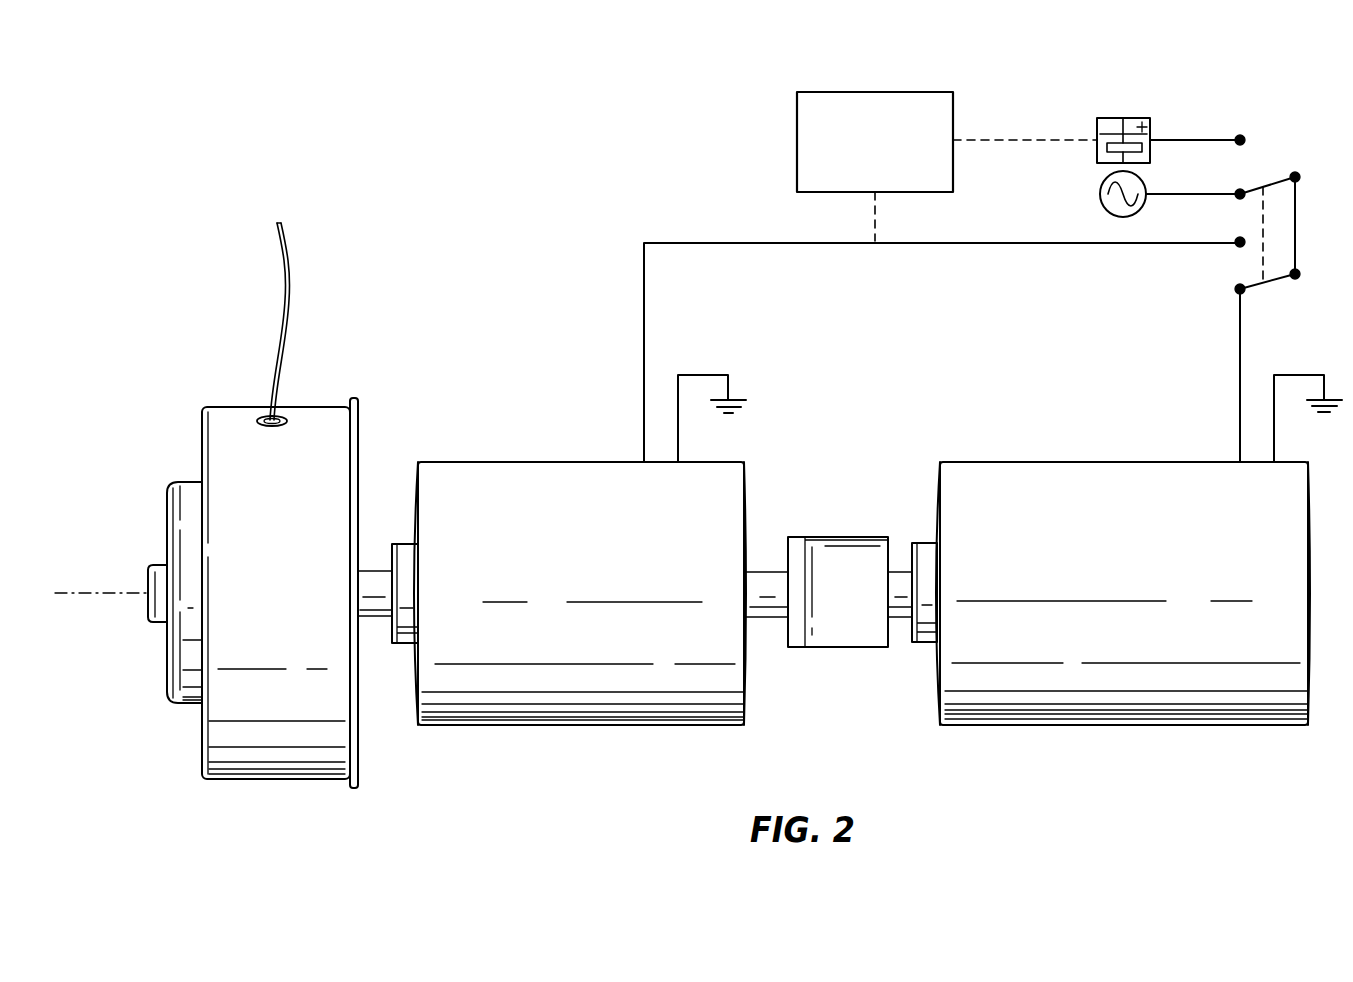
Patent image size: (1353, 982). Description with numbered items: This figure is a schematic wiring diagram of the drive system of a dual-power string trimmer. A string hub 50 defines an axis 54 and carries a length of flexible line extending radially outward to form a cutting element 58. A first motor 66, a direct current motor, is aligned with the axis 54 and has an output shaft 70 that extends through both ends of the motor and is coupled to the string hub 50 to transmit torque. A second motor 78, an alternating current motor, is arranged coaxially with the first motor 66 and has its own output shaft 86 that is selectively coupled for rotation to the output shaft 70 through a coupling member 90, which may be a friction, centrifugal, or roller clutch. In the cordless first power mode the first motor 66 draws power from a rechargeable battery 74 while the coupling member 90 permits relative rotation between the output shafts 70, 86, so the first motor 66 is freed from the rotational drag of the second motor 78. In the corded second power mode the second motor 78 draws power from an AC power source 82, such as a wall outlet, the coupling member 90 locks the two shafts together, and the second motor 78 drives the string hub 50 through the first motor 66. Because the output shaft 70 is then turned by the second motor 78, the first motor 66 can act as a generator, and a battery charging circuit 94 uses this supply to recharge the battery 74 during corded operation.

The string hub 50 is at (277, 781).
The axis 54 is at (120, 592).
The cutting element 58 is at (284, 291).
The first motor 66 is at (572, 725).
The output shaft 70 is at (372, 570).
The rechargeable battery 74 is at (1110, 118).
The second motor 78 is at (1110, 725).
The AC power source 82 is at (1108, 208).
The output shaft 86 is at (902, 618).
The coupling member 90 is at (840, 537).
The battery charging circuit 94 is at (797, 125).